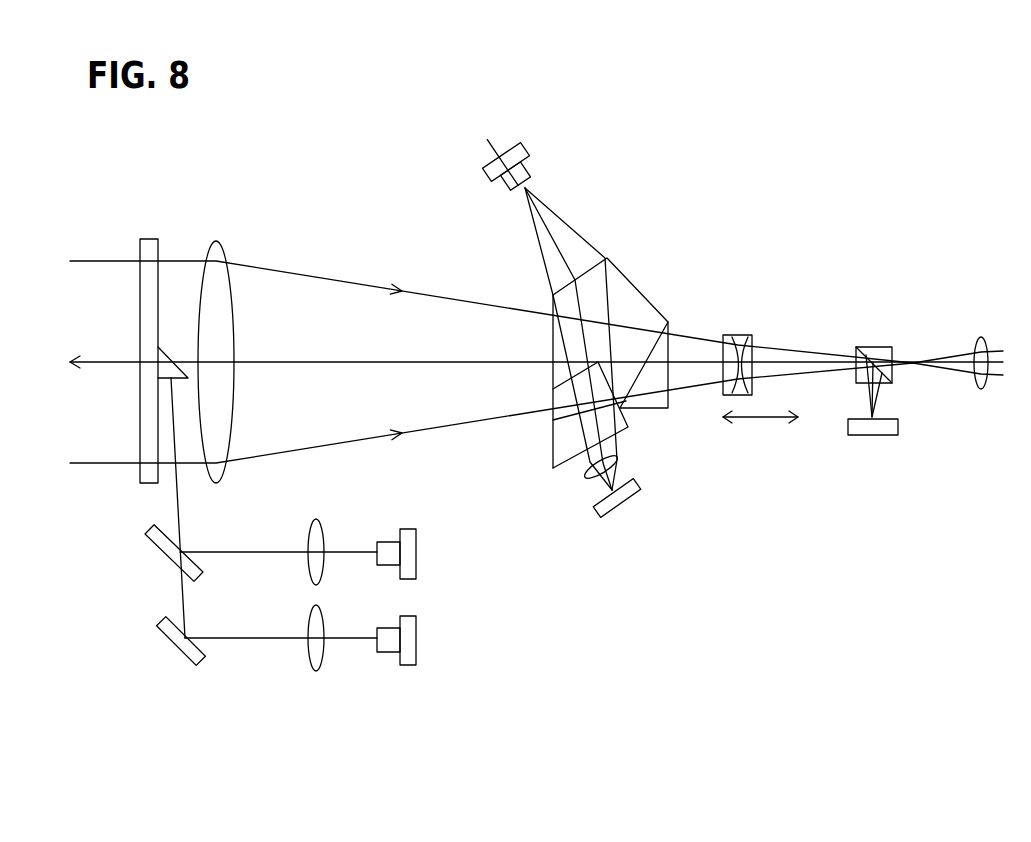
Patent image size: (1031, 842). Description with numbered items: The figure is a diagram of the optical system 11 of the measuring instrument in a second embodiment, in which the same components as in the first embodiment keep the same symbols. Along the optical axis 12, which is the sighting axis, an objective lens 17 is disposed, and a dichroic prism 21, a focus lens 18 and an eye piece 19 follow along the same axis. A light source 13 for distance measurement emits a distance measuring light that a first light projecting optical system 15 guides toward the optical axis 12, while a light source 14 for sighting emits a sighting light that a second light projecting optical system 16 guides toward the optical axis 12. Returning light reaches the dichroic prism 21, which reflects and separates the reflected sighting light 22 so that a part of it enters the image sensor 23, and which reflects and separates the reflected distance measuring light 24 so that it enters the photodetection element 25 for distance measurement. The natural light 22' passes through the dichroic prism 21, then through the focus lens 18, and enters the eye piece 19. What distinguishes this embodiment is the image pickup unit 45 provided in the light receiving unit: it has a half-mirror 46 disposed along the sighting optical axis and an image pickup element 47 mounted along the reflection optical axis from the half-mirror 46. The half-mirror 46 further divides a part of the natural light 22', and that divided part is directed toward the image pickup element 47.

The optical system 11 is at (607, 231).
The optical axis 12 is at (300, 360).
The light source for distance measurement 13 is at (409, 529).
The light source for sighting 14 is at (407, 666).
The first light projecting optical system 15 is at (254, 527).
The second light projecting optical system 16 is at (246, 652).
The objective lens 17 is at (216, 241).
The focus lens 18 is at (743, 335).
The eye piece 19 is at (984, 338).
The dichroic prism 21 is at (620, 268).
The reflected sighting light 22 is at (554, 489).
The natural light 22' is at (828, 256).
The image sensor 23 is at (606, 519).
The reflected distance measuring light 24 is at (549, 244).
The photodetection element for distance measurement 25 is at (530, 152).
The image pickup unit 45 is at (842, 400).
The half-mirror 46 is at (884, 345).
The image pickup element 47 is at (867, 436).